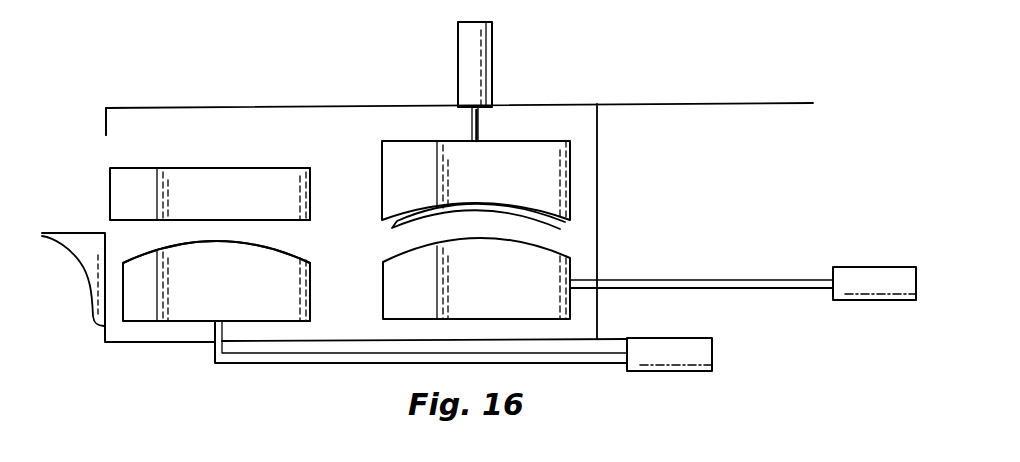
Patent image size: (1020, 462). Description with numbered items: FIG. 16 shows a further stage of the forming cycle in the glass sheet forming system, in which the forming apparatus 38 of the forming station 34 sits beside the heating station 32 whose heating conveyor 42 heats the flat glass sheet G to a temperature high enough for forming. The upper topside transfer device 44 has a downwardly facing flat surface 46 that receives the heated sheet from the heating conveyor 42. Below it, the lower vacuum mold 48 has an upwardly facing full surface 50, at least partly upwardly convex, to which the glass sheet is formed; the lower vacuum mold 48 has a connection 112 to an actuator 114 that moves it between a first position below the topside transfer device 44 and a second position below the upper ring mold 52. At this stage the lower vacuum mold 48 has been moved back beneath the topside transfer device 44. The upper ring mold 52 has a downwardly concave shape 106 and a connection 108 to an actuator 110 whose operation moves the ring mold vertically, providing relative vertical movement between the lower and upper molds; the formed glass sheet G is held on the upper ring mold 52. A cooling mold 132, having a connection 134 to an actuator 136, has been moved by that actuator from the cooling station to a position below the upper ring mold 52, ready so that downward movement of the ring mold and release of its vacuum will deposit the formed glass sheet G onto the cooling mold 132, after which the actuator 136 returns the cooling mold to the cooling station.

The heating station 32 is at (81, 135).
The forming station 34 is at (288, 96).
The forming apparatus 38 is at (186, 328).
The heating conveyor 42 is at (80, 247).
The topside transfer device 44 is at (192, 166).
The flat surface 46 is at (272, 225).
The lower vacuum mold 48 is at (312, 297).
The full surface 50 is at (226, 241).
The upper ring mold 52 is at (570, 166).
The downwardly concave shape 106 is at (440, 220).
The connection 108 is at (478, 125).
The actuator 110 is at (478, 68).
The connection 112 is at (240, 364).
The actuator 114 is at (658, 371).
The cooling mold 132 is at (572, 247).
The connection 134 is at (735, 290).
The actuator 136 is at (862, 298).
The glass sheet G is at (410, 227).